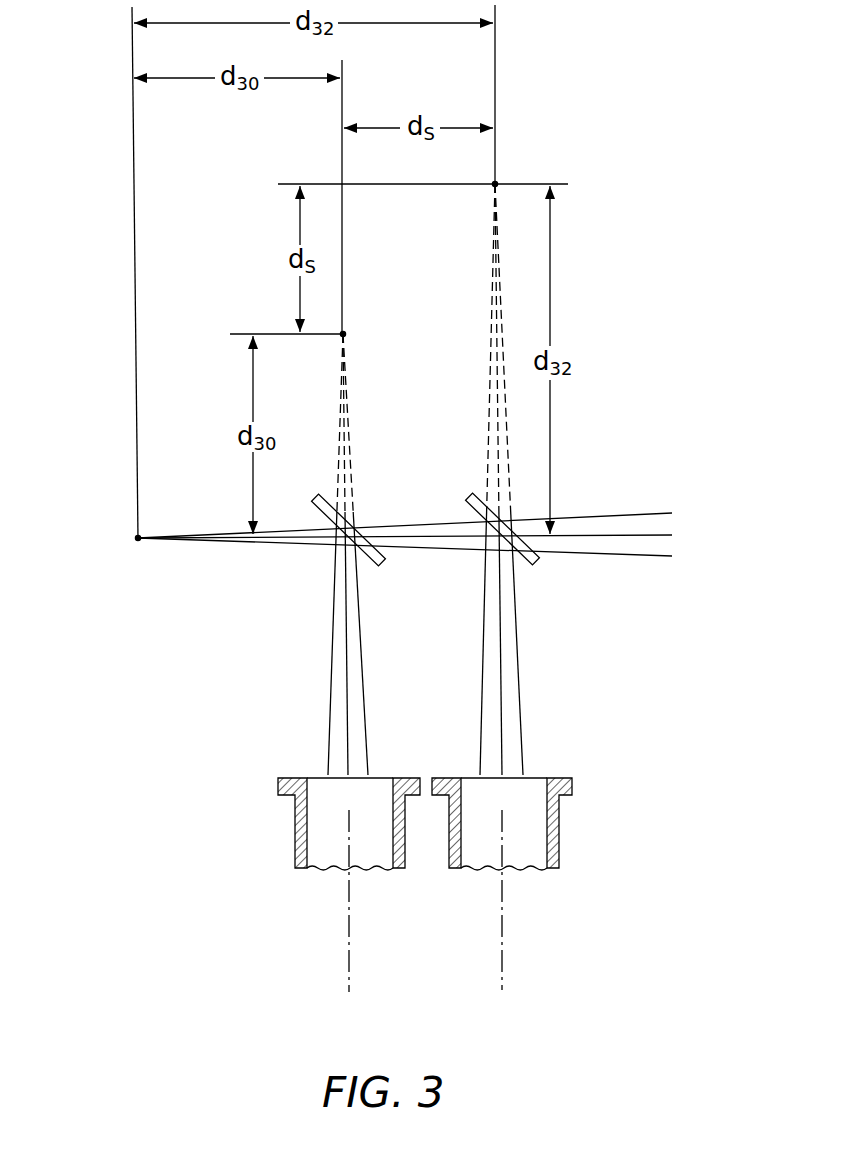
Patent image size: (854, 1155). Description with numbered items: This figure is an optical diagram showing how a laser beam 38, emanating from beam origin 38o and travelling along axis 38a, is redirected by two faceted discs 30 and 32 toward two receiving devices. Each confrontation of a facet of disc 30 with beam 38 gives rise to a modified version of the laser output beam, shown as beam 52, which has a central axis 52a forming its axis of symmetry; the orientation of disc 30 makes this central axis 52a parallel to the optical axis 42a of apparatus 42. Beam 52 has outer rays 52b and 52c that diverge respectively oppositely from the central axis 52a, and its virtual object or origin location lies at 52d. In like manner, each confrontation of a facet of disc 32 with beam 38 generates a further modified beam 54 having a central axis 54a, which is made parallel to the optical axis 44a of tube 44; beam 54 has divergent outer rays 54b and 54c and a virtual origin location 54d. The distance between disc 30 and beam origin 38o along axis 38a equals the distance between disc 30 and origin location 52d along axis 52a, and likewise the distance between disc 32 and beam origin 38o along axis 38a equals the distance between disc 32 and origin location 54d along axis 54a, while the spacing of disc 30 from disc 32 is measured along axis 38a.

The disc 30 is at (316, 506).
The disc 32 is at (469, 507).
The beam 38 is at (222, 530).
The beam origin 38o is at (137, 541).
The axis 38a is at (273, 541).
The apparatus 42 is at (283, 788).
The optical axis 42a is at (350, 942).
The tube 44 is at (571, 783).
The optical axis 44a is at (503, 937).
The modified beam 52 is at (338, 534).
The central axis 52a is at (347, 672).
The outer ray 52b is at (330, 628).
The outer ray 52c is at (362, 717).
The virtual object or origin location 52d is at (345, 333).
The further modified beam 54 is at (516, 448).
The central axis 54a is at (502, 675).
The outer ray 54b is at (482, 718).
The outer ray 54c is at (520, 632).
The virtual object or origin location 54d is at (497, 182).